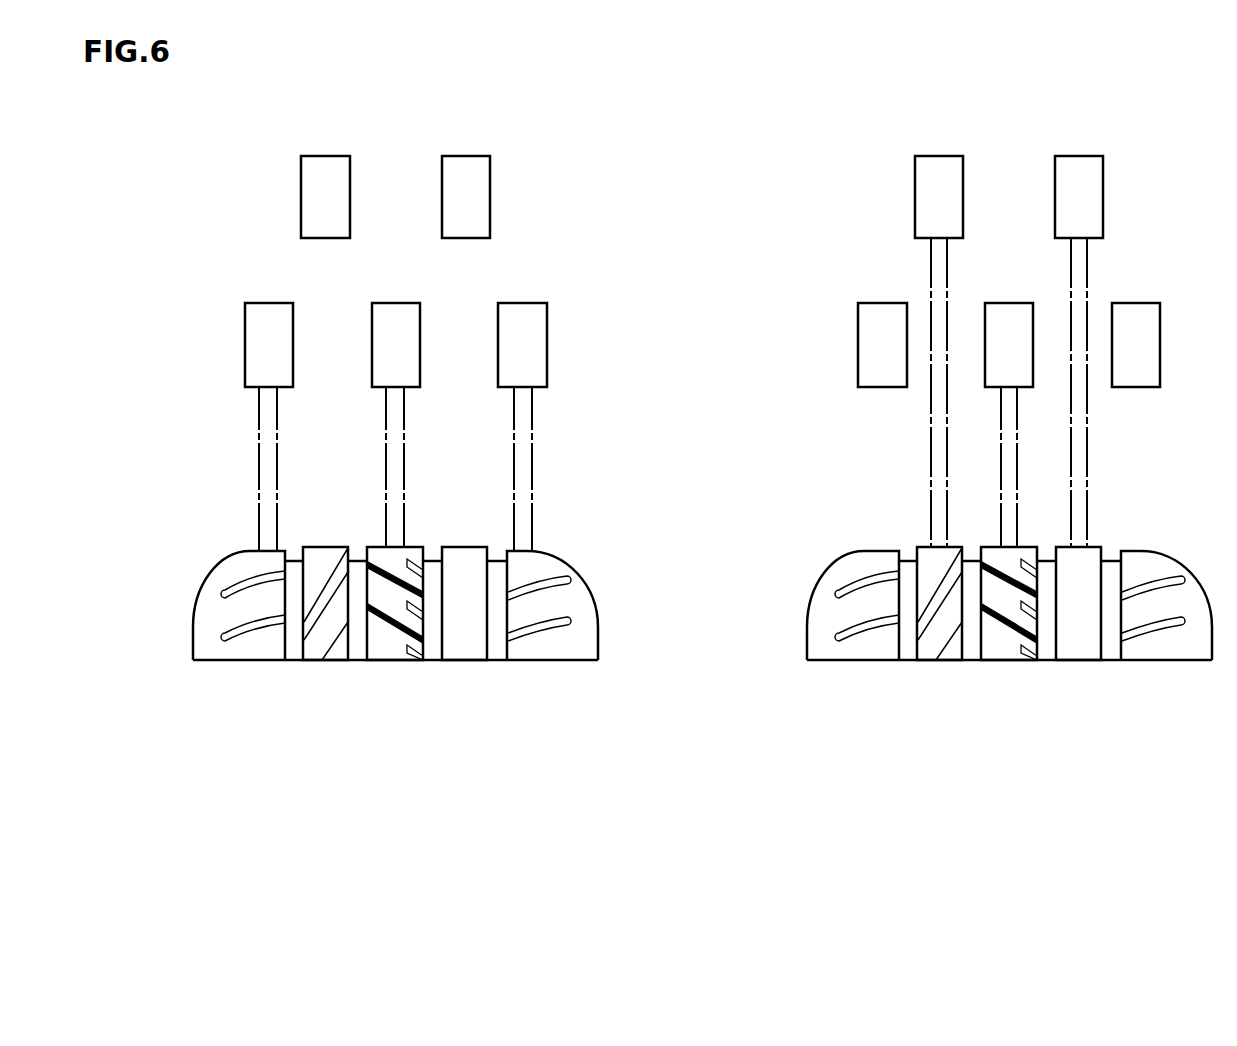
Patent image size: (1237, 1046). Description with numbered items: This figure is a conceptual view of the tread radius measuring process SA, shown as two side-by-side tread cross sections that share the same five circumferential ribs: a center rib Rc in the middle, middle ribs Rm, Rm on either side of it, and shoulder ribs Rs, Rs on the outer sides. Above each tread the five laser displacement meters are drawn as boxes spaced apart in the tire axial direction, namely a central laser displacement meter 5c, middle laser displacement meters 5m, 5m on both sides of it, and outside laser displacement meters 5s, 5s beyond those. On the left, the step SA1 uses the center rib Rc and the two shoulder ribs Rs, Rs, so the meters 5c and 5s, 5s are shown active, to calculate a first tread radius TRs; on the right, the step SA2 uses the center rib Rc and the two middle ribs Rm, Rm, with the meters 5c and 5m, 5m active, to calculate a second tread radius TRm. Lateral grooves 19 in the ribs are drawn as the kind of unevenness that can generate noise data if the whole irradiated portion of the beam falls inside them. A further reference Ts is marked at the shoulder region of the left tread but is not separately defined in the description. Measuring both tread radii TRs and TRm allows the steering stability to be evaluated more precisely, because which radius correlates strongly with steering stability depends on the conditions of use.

The tread radius measuring process SA is at (790, 131).
The step of calculating a first tread radius SA1 is at (562, 255).
The step of calculating a second tread radius SA2 is at (830, 263).
The outside laser displacement meter 5s is at (255, 357).
The central laser displacement meter 5c is at (382, 357).
The middle laser displacement meter 5m is at (921, 209).
The lateral groove 19 is at (249, 627).
The shoulder rib Rs is at (259, 648).
The center rib Rc is at (385, 648).
The middle rib Rm is at (928, 648).
The tread surface (shoulder) Ts is at (248, 552).
The first tread radius TRs is at (519, 551).
The second tread radius TRm is at (1067, 548).